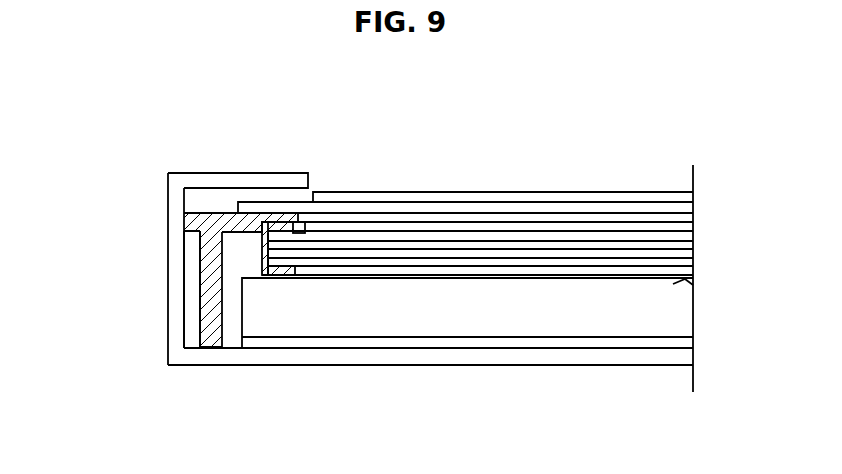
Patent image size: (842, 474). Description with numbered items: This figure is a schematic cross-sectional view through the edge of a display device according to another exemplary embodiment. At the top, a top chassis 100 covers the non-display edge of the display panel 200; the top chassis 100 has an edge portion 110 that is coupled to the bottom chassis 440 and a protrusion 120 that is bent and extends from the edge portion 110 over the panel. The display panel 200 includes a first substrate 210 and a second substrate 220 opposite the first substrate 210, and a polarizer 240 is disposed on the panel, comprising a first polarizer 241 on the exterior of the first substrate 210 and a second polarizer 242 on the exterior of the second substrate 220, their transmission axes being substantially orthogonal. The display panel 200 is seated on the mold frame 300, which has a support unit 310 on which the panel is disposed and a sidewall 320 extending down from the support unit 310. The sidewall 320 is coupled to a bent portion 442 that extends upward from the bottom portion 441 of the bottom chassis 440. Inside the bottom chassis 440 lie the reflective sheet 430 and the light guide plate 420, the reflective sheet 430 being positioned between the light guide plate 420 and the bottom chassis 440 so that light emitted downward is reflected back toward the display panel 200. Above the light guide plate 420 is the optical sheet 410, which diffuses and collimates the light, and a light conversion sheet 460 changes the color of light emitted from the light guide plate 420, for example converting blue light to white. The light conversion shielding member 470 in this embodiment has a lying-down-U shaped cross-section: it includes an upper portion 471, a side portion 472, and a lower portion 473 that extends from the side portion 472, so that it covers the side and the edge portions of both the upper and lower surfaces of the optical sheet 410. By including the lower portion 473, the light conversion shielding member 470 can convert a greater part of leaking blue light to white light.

The top chassis 100 is at (82, 158).
The edge portion 110 is at (180, 216).
The protrusion 120 is at (232, 178).
The display panel 200 is at (592, 119).
The first substrate 210 is at (588, 215).
The second substrate 220 is at (520, 207).
The polarizer 240 is at (430, 119).
The first polarizer 241 is at (427, 227).
The second polarizer 242 is at (352, 197).
The mold frame 300 is at (82, 255).
The support unit 310 is at (242, 230).
The sidewall 320 is at (213, 302).
The optical sheet 410 is at (701, 240).
The light guide plate 420 is at (672, 309).
The reflective sheet 430 is at (672, 342).
The bottom chassis 440 is at (82, 335).
The bottom portion 441 is at (230, 357).
The bent portion 442 is at (194, 327).
The light conversion sheet 460 is at (482, 270).
The light conversion shielding member 470 is at (352, 420).
The upper portion 471 is at (283, 234).
The side portion 472 is at (256, 262).
The lower portion 473 is at (273, 278).